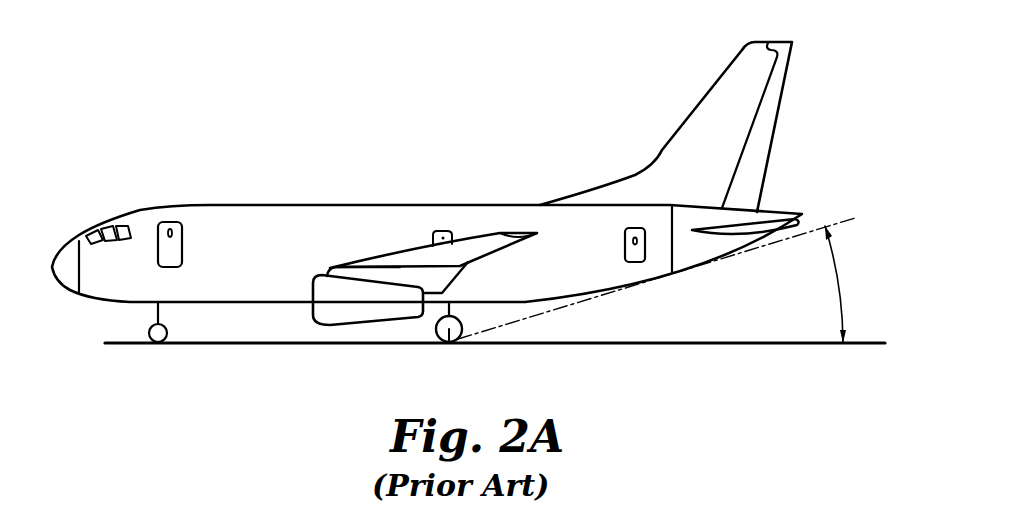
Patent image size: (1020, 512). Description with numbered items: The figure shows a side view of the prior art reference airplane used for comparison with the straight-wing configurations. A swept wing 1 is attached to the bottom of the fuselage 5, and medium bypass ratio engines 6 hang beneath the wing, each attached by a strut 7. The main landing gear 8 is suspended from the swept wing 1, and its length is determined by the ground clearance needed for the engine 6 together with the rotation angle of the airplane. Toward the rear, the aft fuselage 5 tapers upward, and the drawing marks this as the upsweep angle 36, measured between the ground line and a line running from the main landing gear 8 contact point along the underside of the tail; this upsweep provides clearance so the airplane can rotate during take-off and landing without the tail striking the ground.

The swept wing 1 is at (492, 238).
The fuselage 5 is at (223, 280).
The medium bypass ratio engine 6 is at (355, 305).
The strut 7 is at (398, 275).
The main landing gear 8 is at (450, 343).
The upsweep angle 36 is at (840, 287).